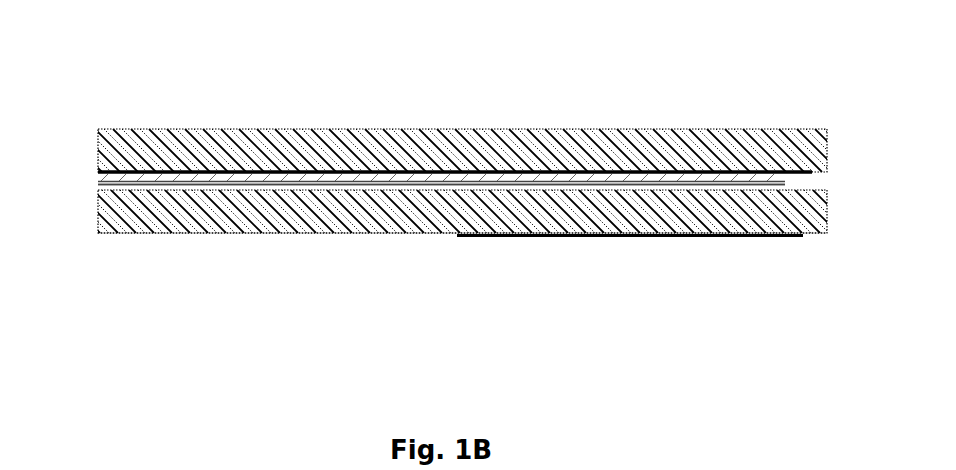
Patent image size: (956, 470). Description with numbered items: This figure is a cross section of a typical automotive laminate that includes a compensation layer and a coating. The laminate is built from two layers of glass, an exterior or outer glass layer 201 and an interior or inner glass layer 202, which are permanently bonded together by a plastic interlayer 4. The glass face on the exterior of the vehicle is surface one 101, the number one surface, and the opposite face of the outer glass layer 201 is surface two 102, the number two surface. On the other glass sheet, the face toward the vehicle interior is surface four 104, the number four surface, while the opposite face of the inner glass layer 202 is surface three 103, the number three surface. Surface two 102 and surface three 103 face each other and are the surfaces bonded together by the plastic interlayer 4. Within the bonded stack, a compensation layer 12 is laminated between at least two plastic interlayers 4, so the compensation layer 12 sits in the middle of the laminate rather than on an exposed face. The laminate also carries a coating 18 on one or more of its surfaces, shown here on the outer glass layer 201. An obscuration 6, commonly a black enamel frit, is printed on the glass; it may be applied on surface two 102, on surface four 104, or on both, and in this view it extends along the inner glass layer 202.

The outer glass layer 201 is at (85, 152).
The inner glass layer 202 is at (84, 219).
The surface one 101 is at (256, 118).
The surface two 102 is at (412, 160).
The surface three 103 is at (249, 203).
The surface four 104 is at (320, 248).
The plastic interlayer 4 is at (154, 160).
The coating 18 is at (556, 159).
The compensation layer 12 is at (445, 201).
The obscuration 6 is at (590, 248).